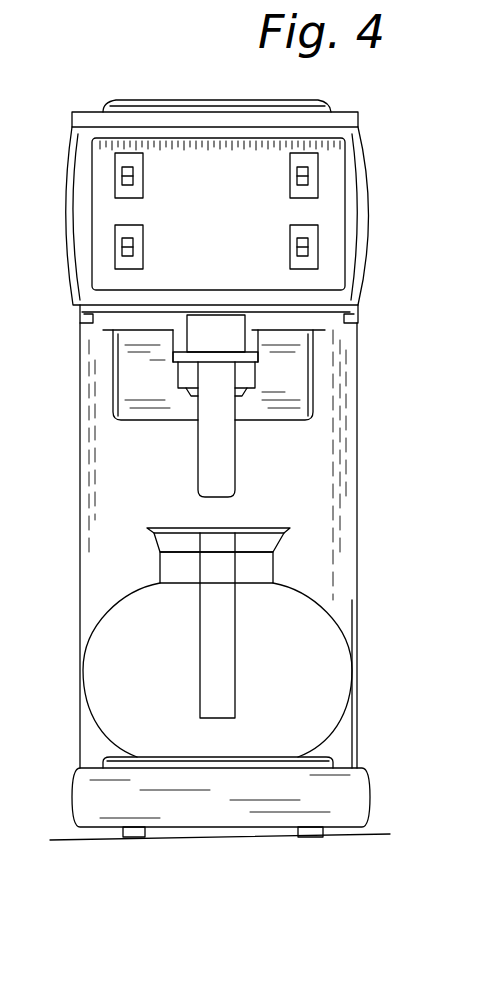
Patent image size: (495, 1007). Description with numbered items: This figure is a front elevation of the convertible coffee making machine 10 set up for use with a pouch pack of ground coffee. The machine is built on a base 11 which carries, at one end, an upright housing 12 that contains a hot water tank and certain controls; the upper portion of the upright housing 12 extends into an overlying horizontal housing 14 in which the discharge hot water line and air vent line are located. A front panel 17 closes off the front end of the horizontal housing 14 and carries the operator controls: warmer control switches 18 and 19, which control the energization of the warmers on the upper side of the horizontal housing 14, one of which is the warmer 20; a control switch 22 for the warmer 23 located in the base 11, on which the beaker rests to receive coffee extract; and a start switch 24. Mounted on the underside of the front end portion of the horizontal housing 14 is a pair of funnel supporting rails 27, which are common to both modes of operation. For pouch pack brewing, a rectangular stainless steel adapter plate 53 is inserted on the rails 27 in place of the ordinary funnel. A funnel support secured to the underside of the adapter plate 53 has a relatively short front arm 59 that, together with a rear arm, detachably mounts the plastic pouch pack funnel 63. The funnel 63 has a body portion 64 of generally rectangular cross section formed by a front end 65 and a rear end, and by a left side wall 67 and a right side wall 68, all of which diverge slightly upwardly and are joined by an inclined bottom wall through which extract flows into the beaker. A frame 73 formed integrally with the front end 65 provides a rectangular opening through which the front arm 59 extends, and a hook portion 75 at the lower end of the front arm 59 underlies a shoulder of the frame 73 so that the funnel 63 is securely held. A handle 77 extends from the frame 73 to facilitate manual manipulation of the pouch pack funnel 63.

The convertible coffee making machine 10 is at (75, 94).
The base 11 is at (372, 793).
The upright housing 12 is at (375, 514).
The horizontal housing 14 is at (381, 191).
The front panel 17 is at (236, 217).
The warmer control switch 18 is at (143, 183).
The warmer control switch 19 is at (290, 168).
The warmer 20 is at (178, 100).
The control switch 22 is at (143, 248).
The warmer 23 is at (335, 757).
The start switch 24 is at (290, 244).
The funnel supporting rails 27 is at (85, 317).
The adapter plate 53 is at (105, 309).
The front arm 59 is at (230, 343).
The plastic pouch pack funnel 63 is at (293, 419).
The body portion 64 is at (320, 370).
The front end 65 is at (157, 393).
The left side wall 67 is at (113, 401).
The right side wall 68 is at (318, 397).
The frame 73 is at (250, 371).
The hook portion 75 is at (194, 388).
The handle 77 is at (205, 483).